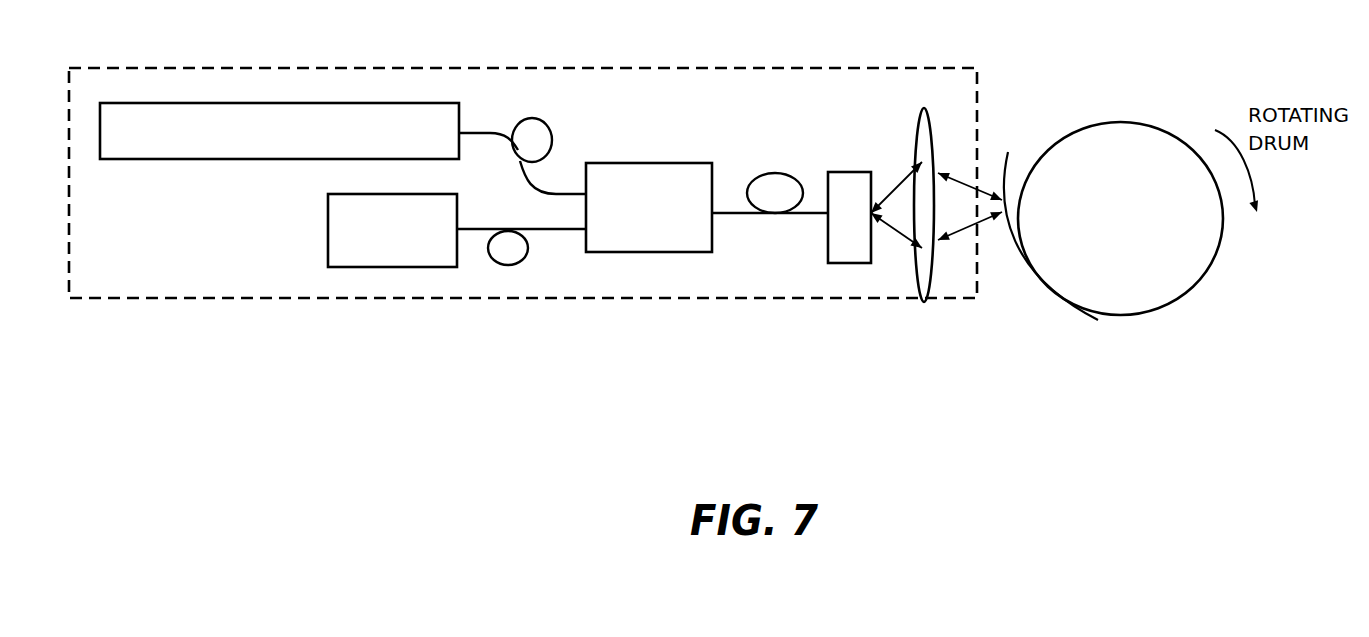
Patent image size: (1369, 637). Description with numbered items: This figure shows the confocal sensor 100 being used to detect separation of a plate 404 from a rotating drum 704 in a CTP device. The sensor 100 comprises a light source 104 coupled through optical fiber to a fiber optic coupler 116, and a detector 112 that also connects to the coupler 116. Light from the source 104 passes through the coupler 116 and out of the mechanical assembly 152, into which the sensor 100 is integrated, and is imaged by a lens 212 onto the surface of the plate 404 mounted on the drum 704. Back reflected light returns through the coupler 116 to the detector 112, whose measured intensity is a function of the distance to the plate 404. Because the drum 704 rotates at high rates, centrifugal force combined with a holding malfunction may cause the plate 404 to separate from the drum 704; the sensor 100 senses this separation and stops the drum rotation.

The confocal sensor 100 is at (150, 315).
The light source 104 is at (279, 131).
The detector 112 is at (392, 230).
The fiber optic coupler 116 is at (649, 207).
The mechanical assembly 152 is at (847, 172).
The lens 212 is at (934, 135).
The plate 404 is at (1048, 293).
The rotating drum 704 is at (1182, 298).